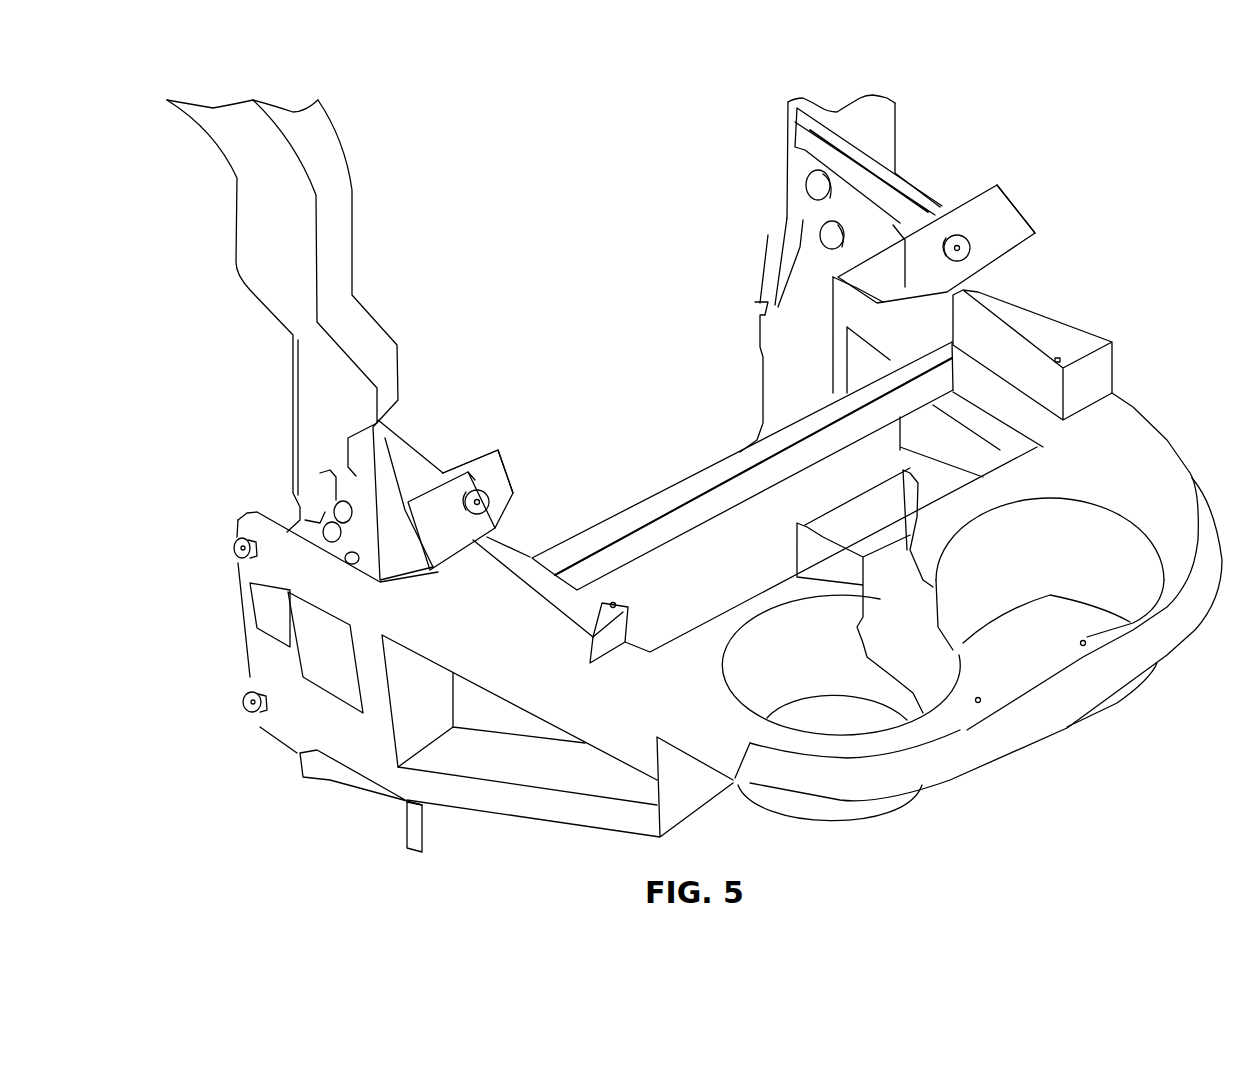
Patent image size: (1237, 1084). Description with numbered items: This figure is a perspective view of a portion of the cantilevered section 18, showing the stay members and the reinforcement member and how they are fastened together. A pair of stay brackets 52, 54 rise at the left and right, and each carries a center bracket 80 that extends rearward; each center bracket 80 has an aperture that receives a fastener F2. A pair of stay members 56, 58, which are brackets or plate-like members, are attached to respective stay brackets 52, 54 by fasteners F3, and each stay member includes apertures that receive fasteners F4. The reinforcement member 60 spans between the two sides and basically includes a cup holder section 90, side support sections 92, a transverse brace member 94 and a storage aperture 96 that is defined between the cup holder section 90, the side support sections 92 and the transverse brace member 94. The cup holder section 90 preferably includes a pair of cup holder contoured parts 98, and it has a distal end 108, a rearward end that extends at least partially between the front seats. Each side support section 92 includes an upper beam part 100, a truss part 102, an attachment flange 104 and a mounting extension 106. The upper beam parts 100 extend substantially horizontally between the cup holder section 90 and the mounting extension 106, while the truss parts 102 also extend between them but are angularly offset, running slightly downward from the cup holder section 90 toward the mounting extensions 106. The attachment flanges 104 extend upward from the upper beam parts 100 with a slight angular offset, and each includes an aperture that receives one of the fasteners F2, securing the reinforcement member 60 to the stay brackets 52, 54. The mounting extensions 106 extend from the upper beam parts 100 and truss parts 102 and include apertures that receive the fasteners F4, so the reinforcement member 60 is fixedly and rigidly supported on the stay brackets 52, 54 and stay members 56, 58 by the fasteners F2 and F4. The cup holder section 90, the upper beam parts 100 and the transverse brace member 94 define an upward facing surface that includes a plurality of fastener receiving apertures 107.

The cantilevered section 18 is at (1095, 273).
The stay bracket 52 is at (340, 146).
The stay bracket 54 is at (897, 117).
The stay member 56 is at (300, 768).
The stay member 58 is at (758, 332).
The reinforcement member 60 is at (1147, 427).
The center bracket 80 is at (487, 453).
The cup holder section 90 is at (1088, 528).
The side support section 92 is at (300, 660).
The transverse brace member 94 is at (708, 467).
The storage aperture 96 is at (708, 548).
The cup holder contoured part 98 is at (800, 597).
The upper beam part 100 is at (587, 600).
The truss part 102 is at (533, 823).
The attachment flange 104 is at (470, 473).
The mounting extension 106 is at (240, 593).
The fastener receiving aperture 107 is at (615, 603).
The distal end 108 is at (1050, 735).
The fastener F2 is at (490, 500).
The fastener F3 is at (822, 203).
The fastener F4 is at (197, 727).